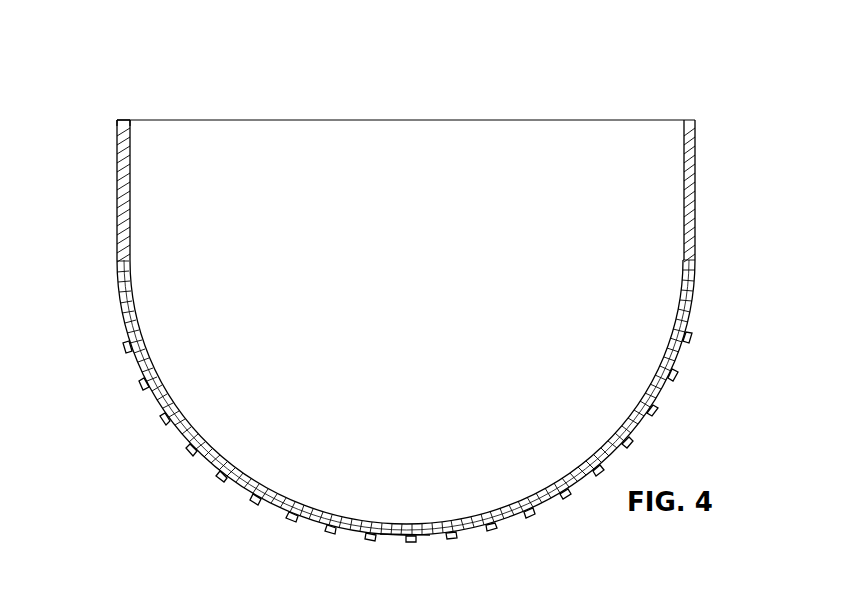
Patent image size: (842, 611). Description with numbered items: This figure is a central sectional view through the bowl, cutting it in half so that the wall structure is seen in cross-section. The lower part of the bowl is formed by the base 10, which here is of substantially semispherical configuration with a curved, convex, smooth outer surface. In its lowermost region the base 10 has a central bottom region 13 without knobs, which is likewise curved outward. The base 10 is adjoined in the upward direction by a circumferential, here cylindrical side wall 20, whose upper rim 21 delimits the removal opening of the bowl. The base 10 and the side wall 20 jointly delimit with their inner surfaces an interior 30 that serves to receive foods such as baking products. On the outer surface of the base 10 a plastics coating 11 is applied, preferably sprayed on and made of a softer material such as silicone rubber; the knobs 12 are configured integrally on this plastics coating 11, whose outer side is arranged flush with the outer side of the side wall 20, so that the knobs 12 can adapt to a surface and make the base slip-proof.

The base 10 is at (671, 333).
The plastics coating 11 is at (692, 270).
The knobs 12 is at (183, 442).
The central bottom region 13 is at (382, 534).
The side wall 20 is at (692, 207).
The upper rim 21 is at (124, 124).
The interior 30 is at (618, 147).